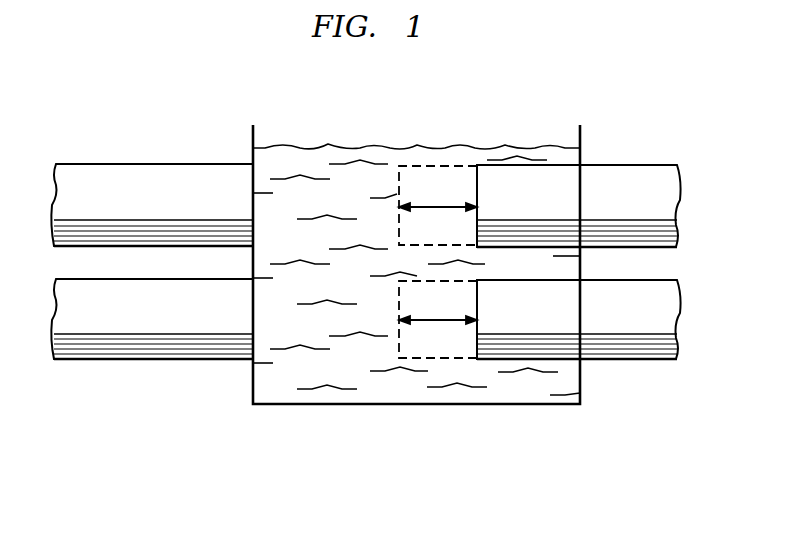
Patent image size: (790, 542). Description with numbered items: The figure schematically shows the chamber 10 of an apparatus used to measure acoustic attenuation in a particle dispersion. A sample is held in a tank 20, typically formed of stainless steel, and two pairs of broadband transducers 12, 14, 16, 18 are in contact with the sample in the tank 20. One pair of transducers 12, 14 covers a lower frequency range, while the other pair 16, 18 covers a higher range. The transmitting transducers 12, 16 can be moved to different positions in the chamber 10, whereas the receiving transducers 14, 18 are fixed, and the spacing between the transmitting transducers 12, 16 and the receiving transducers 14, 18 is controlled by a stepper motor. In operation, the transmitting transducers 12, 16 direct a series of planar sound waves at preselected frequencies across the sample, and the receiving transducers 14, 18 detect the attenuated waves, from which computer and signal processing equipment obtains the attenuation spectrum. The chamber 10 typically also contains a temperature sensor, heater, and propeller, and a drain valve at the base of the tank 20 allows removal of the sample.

The chamber 10 is at (688, 420).
The transmitting transducer 12 is at (633, 165).
The receiving transducer 14 is at (153, 164).
The transmitting transducer 16 is at (633, 280).
The receiving transducer 18 is at (153, 279).
The tank 20 is at (384, 404).